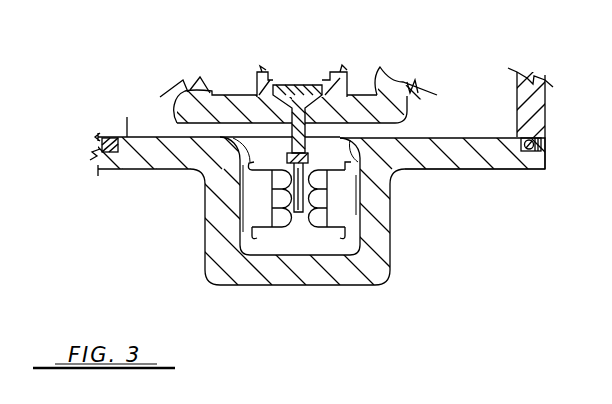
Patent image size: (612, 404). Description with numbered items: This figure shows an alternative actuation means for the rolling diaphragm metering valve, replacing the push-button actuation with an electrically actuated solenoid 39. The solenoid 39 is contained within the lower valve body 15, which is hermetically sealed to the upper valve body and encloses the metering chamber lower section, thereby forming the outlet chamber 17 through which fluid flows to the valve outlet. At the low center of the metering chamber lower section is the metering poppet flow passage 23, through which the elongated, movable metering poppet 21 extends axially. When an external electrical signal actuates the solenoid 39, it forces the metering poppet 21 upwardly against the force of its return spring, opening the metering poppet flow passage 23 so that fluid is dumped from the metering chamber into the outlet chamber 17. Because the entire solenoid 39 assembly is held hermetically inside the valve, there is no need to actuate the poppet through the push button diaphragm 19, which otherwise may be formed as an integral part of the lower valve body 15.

The lower valve body 15 is at (163, 158).
The outlet chamber 17 is at (187, 132).
The push button diaphragm 19 is at (418, 168).
The metering poppet 21 is at (303, 87).
The metering poppet flow passage 23 is at (390, 200).
The solenoid 39 is at (380, 284).